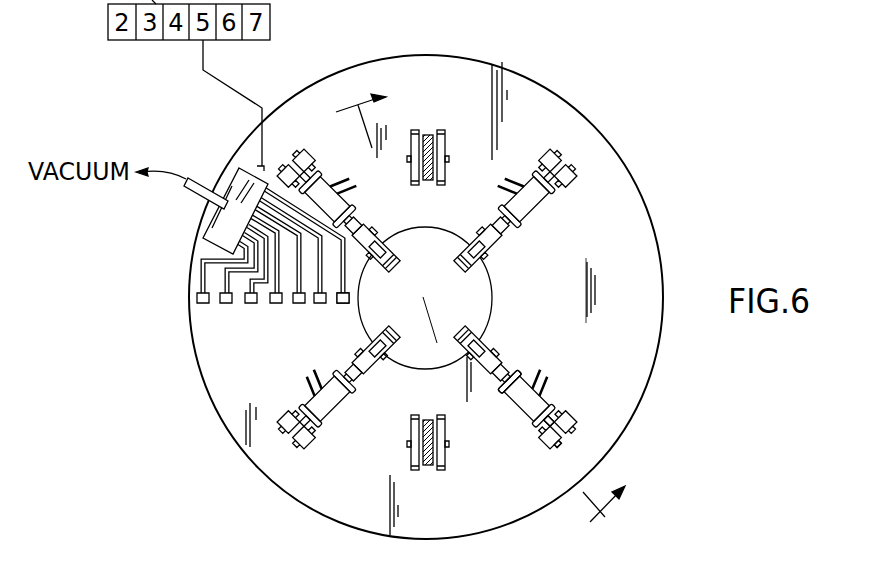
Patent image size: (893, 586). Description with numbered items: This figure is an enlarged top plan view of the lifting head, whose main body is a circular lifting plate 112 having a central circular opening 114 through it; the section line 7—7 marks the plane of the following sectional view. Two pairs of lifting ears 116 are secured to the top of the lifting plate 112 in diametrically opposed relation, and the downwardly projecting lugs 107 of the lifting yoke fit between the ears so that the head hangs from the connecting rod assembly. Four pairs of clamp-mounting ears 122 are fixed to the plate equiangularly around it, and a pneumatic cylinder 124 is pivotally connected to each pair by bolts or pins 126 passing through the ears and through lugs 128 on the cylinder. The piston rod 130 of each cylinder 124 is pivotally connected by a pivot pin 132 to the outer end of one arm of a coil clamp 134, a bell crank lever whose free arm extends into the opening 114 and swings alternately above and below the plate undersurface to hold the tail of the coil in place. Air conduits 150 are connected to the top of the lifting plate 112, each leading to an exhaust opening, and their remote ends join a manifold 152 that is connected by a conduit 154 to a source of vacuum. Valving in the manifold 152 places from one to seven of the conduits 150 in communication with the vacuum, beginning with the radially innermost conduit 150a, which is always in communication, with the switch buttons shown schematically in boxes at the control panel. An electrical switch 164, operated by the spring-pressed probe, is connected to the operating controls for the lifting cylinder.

The section line 7— 7 is at (470, 319).
The lugs 107 is at (430, 184).
The lifting plate 112 is at (337, 497).
The central circular opening 114 is at (485, 280).
The lifting ears 116 is at (441, 132).
The clamp-mounting ears 122 is at (292, 150).
The pneumatic cylinders 124 is at (334, 182).
The bolts or pins 126 is at (572, 413).
The lugs 128 is at (554, 414).
The piston rod 130 is at (506, 368).
The pivot pin 132 is at (488, 352).
The coil clamp 134 is at (492, 303).
The air conduits 150 is at (248, 292).
The innermost conduit 150a is at (322, 306).
The manifold 152 is at (229, 190).
The vacuum conduit 154 is at (198, 197).
The electrical switch 164 is at (427, 294).